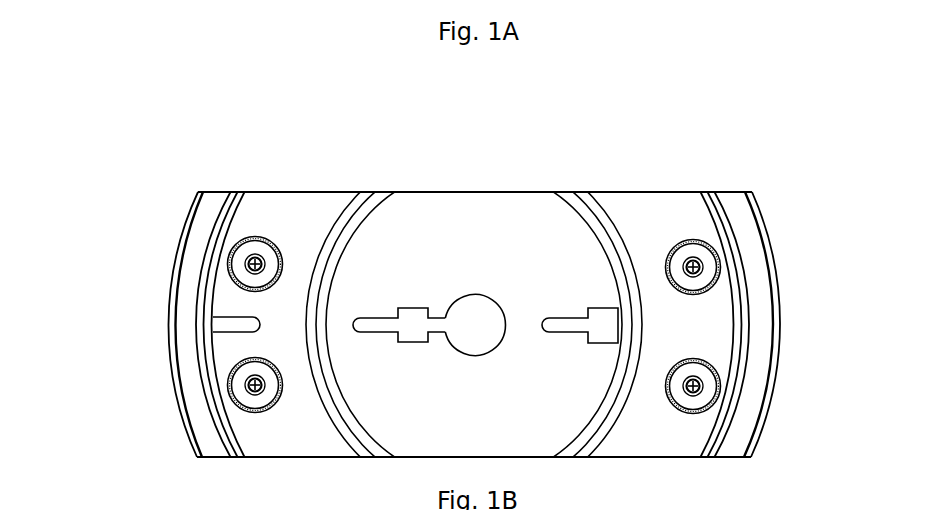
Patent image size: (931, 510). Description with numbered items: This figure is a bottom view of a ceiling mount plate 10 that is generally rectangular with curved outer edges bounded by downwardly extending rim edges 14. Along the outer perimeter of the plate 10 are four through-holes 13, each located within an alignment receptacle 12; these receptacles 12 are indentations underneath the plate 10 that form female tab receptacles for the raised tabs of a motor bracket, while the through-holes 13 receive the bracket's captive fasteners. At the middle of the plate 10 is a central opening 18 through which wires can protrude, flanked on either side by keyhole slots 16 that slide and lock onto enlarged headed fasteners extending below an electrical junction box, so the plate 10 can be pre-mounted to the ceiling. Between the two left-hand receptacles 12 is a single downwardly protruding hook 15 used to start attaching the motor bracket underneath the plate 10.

The ceiling mount plate 10 is at (253, 138).
The alignment receptacles 12 is at (244, 262).
The through-holes 13 is at (696, 263).
The rim edges 14 is at (187, 420).
The hook 15 is at (232, 322).
The keyhole slots 16 is at (380, 317).
The central opening 18 is at (470, 294).